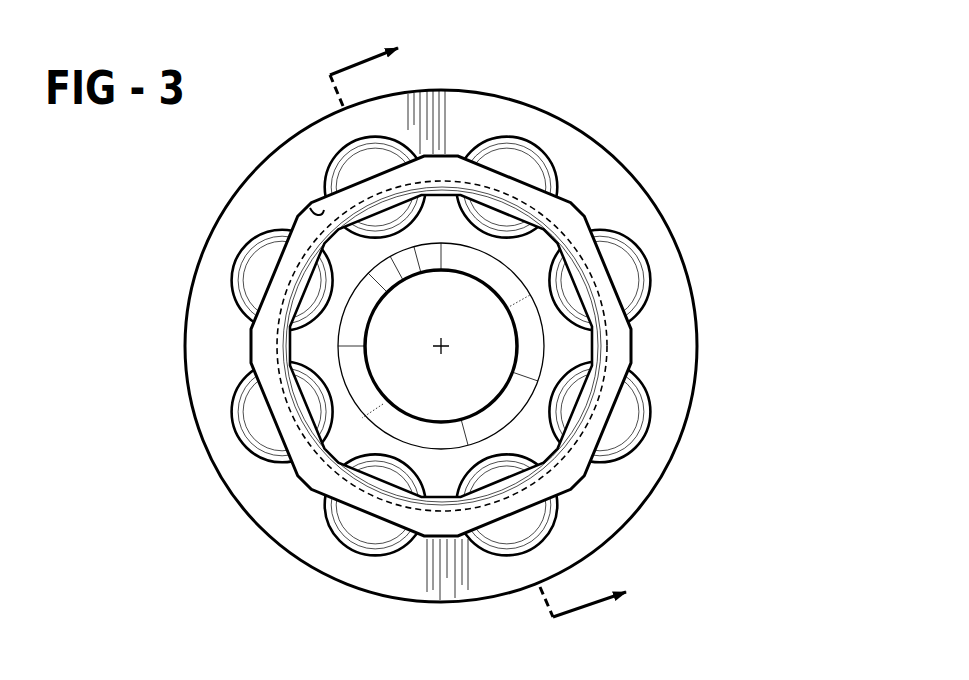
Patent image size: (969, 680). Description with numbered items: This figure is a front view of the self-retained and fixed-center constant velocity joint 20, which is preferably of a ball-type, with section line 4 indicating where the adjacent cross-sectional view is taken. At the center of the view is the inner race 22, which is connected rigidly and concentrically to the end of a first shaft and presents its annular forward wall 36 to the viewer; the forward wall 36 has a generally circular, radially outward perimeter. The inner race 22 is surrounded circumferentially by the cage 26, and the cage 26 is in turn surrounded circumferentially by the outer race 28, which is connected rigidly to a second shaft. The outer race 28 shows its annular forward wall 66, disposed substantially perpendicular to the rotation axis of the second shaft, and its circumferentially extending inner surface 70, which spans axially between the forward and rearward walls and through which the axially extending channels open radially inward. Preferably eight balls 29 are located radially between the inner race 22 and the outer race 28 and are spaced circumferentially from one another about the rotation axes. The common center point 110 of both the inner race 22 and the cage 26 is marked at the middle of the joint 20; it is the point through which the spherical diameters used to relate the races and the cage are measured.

The constant velocity joint 20 is at (578, 102).
The inner race 22 is at (552, 458).
The cage 26 is at (637, 350).
The outer race 28 is at (703, 328).
The balls 29 is at (634, 437).
The annular forward wall 36 is at (328, 352).
The annular forward wall 66 is at (632, 207).
The inner surface 70 is at (310, 208).
The common center point 110 is at (444, 348).
The section line 4 is at (487, 322).